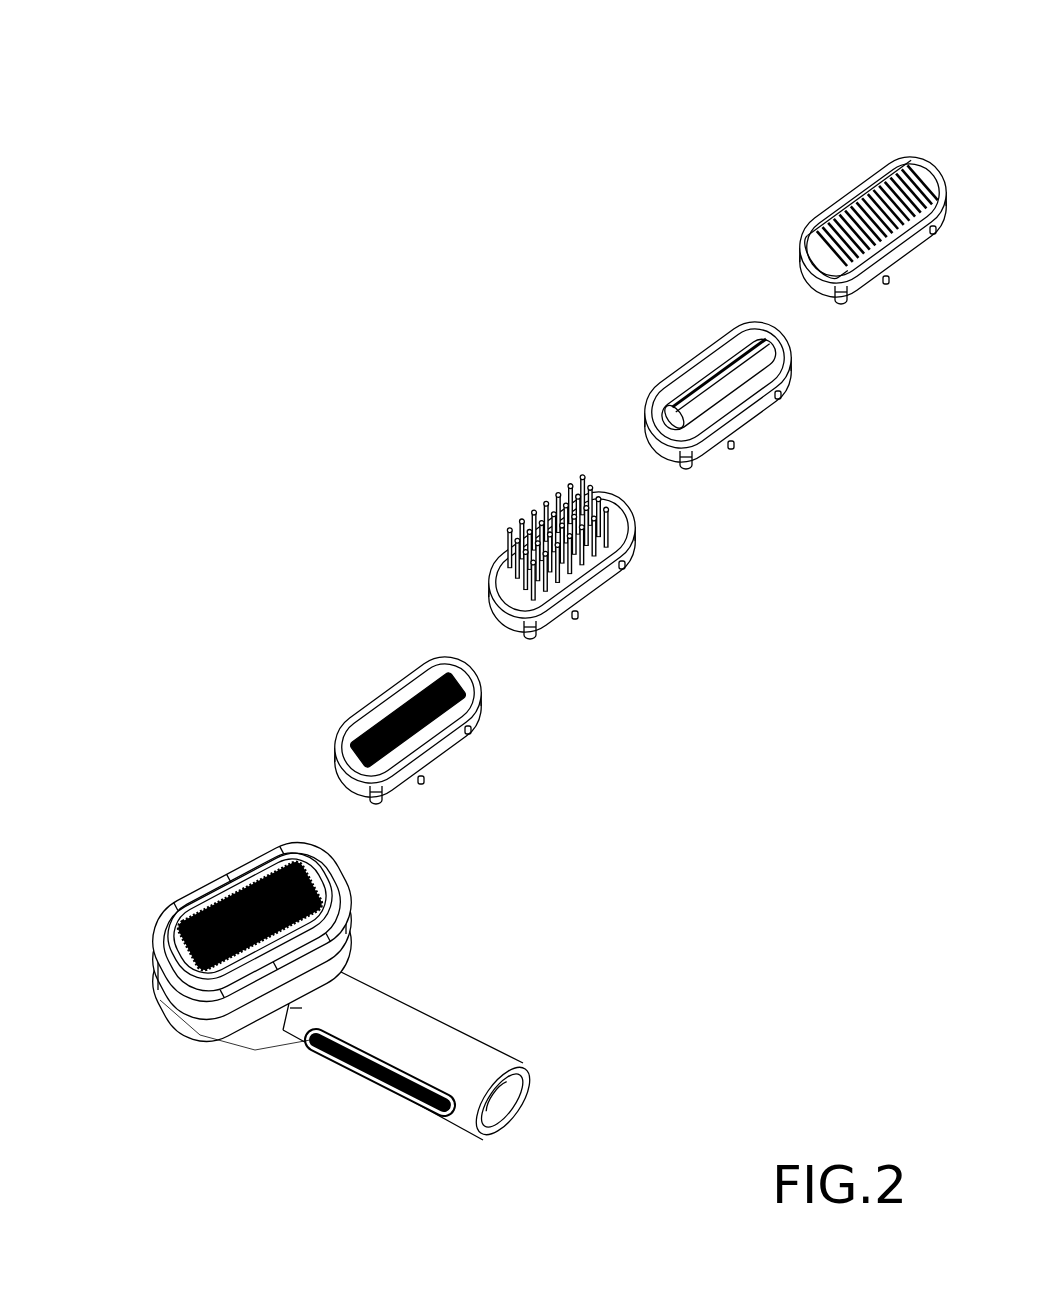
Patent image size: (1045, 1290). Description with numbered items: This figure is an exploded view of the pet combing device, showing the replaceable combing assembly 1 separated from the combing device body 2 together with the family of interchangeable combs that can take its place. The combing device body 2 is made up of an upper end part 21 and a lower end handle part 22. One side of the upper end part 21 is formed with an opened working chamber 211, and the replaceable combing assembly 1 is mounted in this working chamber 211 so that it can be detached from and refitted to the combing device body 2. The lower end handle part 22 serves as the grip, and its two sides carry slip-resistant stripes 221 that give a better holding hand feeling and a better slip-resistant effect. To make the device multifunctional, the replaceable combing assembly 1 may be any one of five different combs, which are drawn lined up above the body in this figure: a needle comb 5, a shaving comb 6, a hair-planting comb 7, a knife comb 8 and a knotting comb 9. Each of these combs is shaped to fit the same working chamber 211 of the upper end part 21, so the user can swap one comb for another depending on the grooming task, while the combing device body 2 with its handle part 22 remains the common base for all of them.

The replaceable combing assembly 1 is at (313, 897).
The combing device body 2 is at (394, 1029).
The upper end part 21 is at (198, 991).
The working chamber 211 is at (211, 991).
The lower end handle part 22 is at (408, 1092).
The slip-resistant stripes 221 is at (251, 1136).
The needle comb 5 is at (204, 843).
The shaving comb 6 is at (355, 681).
The hair-planting comb 7 is at (521, 511).
The knife comb 8 is at (664, 338).
The knotting comb 9 is at (766, 159).